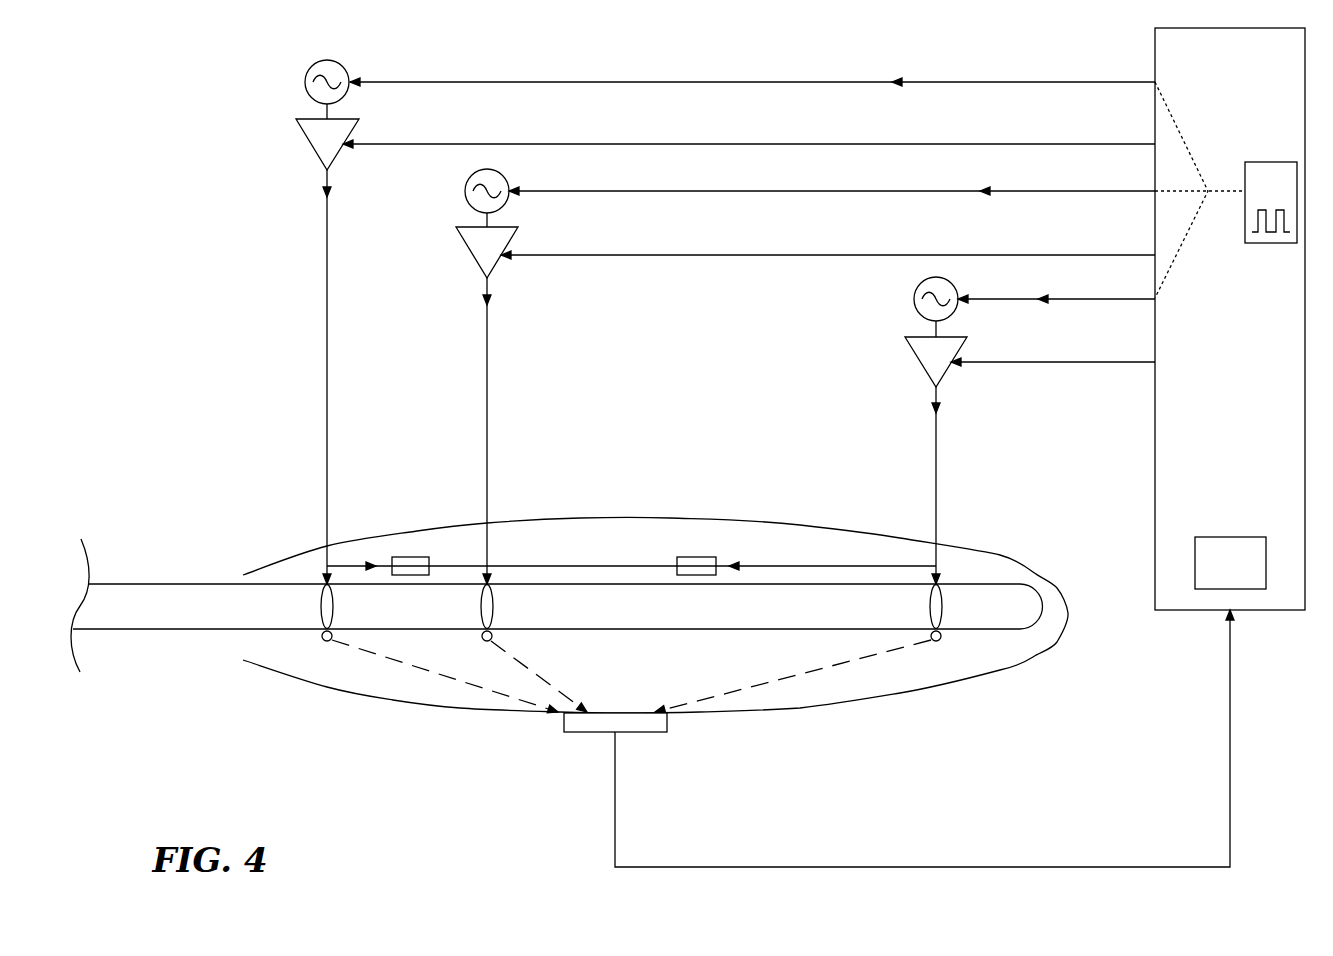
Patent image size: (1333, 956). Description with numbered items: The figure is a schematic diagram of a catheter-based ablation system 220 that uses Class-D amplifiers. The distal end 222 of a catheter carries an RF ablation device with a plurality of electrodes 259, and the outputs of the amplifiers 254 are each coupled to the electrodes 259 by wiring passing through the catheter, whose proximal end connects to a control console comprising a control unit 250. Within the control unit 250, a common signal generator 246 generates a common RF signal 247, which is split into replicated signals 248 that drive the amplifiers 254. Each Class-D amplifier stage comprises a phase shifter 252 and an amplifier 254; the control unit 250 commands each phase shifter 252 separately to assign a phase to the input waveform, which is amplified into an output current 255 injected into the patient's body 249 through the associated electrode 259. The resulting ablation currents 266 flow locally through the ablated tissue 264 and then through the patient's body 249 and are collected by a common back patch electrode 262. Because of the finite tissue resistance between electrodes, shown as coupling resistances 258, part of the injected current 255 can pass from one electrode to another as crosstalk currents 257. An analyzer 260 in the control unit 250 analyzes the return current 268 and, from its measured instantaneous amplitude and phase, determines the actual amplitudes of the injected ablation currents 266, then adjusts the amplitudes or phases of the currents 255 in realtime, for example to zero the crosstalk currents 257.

The catheter-based ablation system 220 is at (108, 58).
The distal end 222 is at (178, 583).
The common signal generator 246 is at (1268, 162).
The common RF signal 247 is at (1218, 192).
The replicated signals 248 is at (890, 78).
The patient's body 249 is at (388, 698).
The control unit 250 is at (1230, 319).
The phase shifter 252 is at (305, 82).
The Class-D amplifier 254 is at (303, 130).
The output current 255 is at (322, 196).
The crosstalk currents 257 is at (368, 563).
The coupling resistances 258 is at (412, 557).
The electrode 259 is at (656, 607).
The analyzer 260 is at (1230, 563).
The common back patch electrode 262 is at (580, 733).
The ablated tissue 264 is at (327, 642).
The ablation currents 266 is at (418, 668).
The return current 268 is at (1230, 735).